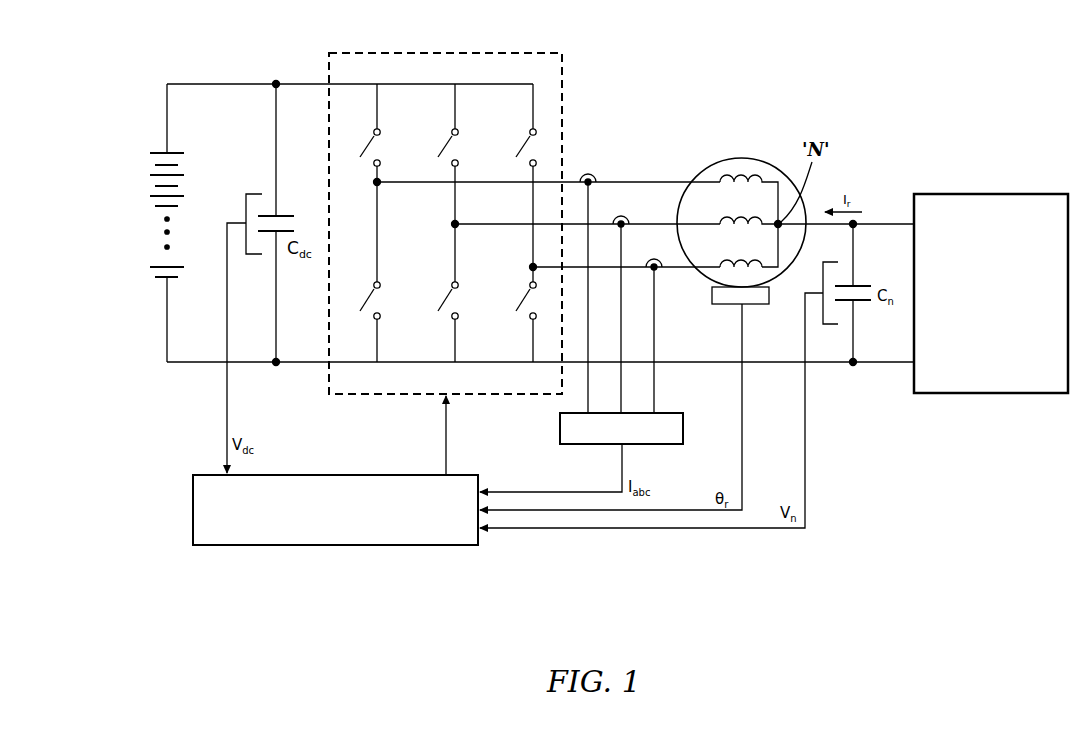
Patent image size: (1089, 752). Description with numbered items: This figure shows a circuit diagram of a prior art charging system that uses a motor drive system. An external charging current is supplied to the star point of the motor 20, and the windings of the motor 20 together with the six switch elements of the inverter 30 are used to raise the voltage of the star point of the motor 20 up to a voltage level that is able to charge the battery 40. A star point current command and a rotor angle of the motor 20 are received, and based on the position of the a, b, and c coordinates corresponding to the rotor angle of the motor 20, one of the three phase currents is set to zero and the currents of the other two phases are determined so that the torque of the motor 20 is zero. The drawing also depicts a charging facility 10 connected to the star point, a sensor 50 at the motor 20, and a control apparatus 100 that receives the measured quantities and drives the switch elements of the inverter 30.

The charging facility (EVSE) 10 is at (990, 194).
The motor 20 is at (742, 158).
The inverter 30 is at (563, 121).
The battery 40 is at (152, 228).
The position sensor 50 is at (758, 304).
The control apparatus 100 is at (352, 545).